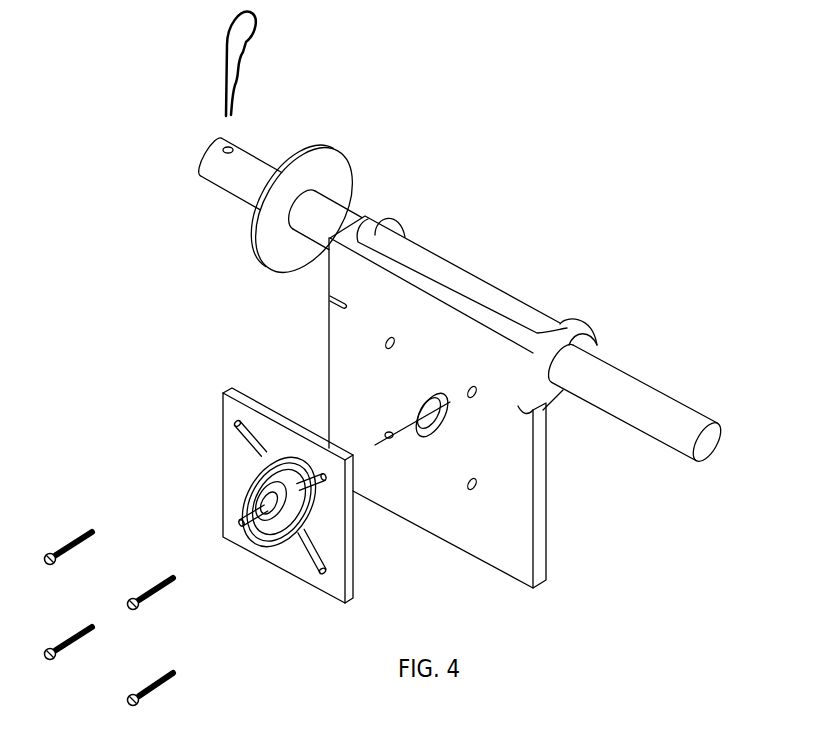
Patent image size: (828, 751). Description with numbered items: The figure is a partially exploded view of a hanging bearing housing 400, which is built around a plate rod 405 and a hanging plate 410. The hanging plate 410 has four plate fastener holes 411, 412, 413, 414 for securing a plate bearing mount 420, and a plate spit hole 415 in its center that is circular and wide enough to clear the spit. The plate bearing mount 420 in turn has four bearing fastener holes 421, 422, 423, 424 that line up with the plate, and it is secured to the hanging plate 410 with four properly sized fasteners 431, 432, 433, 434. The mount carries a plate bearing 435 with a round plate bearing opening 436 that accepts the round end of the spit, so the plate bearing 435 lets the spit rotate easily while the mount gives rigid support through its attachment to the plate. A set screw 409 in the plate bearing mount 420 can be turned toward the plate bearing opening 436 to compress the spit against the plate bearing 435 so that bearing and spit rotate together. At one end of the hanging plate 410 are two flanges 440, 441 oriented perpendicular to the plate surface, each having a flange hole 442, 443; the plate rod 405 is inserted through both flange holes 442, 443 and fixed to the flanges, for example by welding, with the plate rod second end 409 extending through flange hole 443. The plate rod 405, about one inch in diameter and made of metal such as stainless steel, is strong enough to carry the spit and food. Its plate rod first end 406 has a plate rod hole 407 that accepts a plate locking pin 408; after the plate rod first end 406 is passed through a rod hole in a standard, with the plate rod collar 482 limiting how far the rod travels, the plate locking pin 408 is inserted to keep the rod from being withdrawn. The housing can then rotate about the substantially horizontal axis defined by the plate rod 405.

The hanging bearing housing 400 is at (607, 130).
The plate rod 405 is at (250, 163).
The plate rod first end 406 is at (204, 160).
The plate rod hole 407 is at (224, 147).
The plate locking pin 408 is at (246, 53).
The plate rod collar 482 is at (297, 272).
The flange 440 is at (372, 214).
The flange 441 is at (595, 337).
The flange hole 442 is at (379, 222).
The flange hole 443 is at (570, 328).
The set screw 409 is at (662, 380).
The hanging plate 410 is at (522, 481).
The plate fastener hole 411 is at (392, 340).
The plate fastener hole 412 is at (474, 388).
The plate fastener hole 413 is at (474, 478).
The plate fastener hole 414 is at (389, 432).
The plate spit hole 415 is at (416, 400).
The plate bearing mount 420 is at (232, 472).
The bearing fastener hole 421 is at (237, 423).
The bearing fastener hole 422 is at (323, 474).
The bearing fastener hole 423 is at (335, 565).
The bearing fastener hole 424 is at (240, 522).
The plate bearing 435 is at (301, 528).
The plate bearing opening 436 is at (267, 518).
The fastener 431 is at (72, 538).
The fastener 432 is at (151, 586).
The fastener 433 is at (151, 682).
The fastener 434 is at (72, 632).